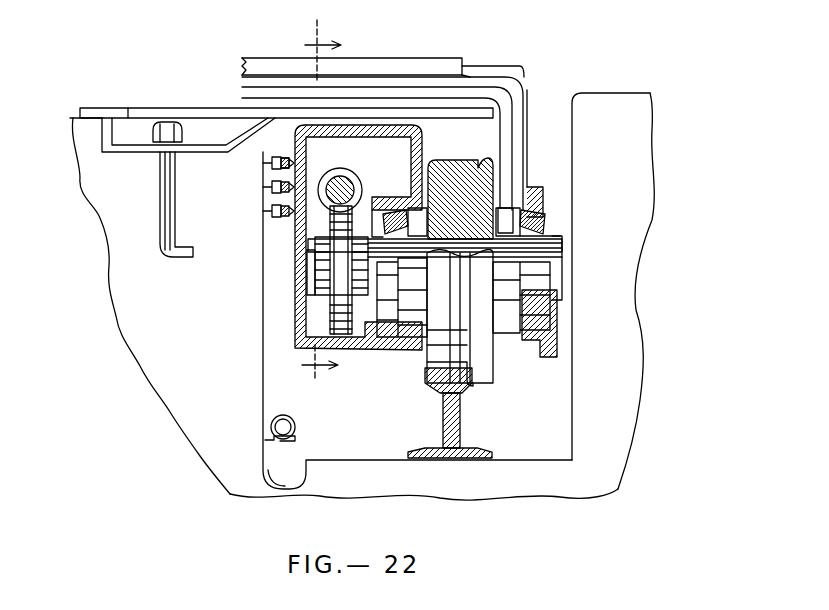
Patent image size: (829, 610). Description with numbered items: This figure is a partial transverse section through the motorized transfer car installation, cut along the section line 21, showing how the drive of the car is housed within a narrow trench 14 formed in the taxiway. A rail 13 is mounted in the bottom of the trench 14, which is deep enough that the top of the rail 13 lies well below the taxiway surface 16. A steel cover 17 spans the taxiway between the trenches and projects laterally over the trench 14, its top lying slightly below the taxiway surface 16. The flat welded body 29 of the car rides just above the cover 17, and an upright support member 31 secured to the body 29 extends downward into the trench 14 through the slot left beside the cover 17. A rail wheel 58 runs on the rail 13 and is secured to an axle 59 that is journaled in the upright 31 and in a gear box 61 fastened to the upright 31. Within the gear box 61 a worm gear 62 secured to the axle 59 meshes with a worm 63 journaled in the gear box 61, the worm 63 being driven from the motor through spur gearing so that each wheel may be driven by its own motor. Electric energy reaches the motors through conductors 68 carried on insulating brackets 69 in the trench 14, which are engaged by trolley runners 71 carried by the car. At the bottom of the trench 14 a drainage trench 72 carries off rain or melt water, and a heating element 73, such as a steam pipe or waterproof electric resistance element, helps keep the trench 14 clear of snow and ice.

The rail 13 is at (467, 375).
The trench 14 is at (563, 400).
The taxiway surface 16 is at (618, 92).
The cover 17 is at (209, 108).
The section line 21 is at (325, 202).
The body 29 is at (466, 78).
The upright support member 31 is at (508, 110).
The rail wheel 58 is at (467, 168).
The axle 59 is at (548, 254).
The gear box 61 is at (417, 177).
The worm gear 62 is at (341, 320).
The worm 63 is at (340, 184).
The conductor 68 is at (263, 211).
The insulating bracket 69 is at (262, 187).
The trolley runner 71 is at (288, 158).
The drainage trench 72 is at (290, 463).
The heating element 73 is at (286, 414).